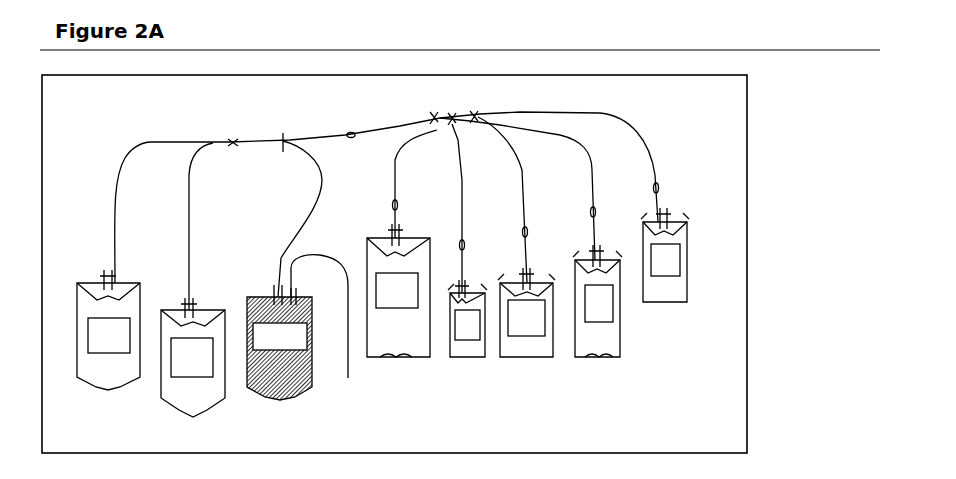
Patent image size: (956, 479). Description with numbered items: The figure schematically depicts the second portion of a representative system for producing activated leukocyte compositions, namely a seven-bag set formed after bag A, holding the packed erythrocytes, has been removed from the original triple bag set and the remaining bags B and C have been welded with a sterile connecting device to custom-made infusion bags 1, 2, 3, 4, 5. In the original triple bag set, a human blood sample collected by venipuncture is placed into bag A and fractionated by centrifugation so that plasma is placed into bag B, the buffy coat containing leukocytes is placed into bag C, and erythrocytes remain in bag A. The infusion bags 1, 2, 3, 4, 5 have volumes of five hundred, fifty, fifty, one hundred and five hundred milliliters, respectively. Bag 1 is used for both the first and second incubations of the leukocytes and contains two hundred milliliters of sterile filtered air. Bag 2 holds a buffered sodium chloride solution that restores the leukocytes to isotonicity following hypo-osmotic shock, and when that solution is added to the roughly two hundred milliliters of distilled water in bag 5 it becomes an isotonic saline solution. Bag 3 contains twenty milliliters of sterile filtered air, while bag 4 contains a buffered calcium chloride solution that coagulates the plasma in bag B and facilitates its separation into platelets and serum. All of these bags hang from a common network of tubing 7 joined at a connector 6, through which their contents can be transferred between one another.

The bag 1 is at (398, 290).
The bag 2 is at (467, 318).
The bag 3 is at (526, 312).
The bag 4 is at (597, 301).
The bag 5 is at (665, 255).
The bag A is at (279, 342).
The bag B is at (108, 330).
The bag C is at (193, 357).
The tubing connector 6 is at (375, 131).
The tubing 7 is at (270, 137).